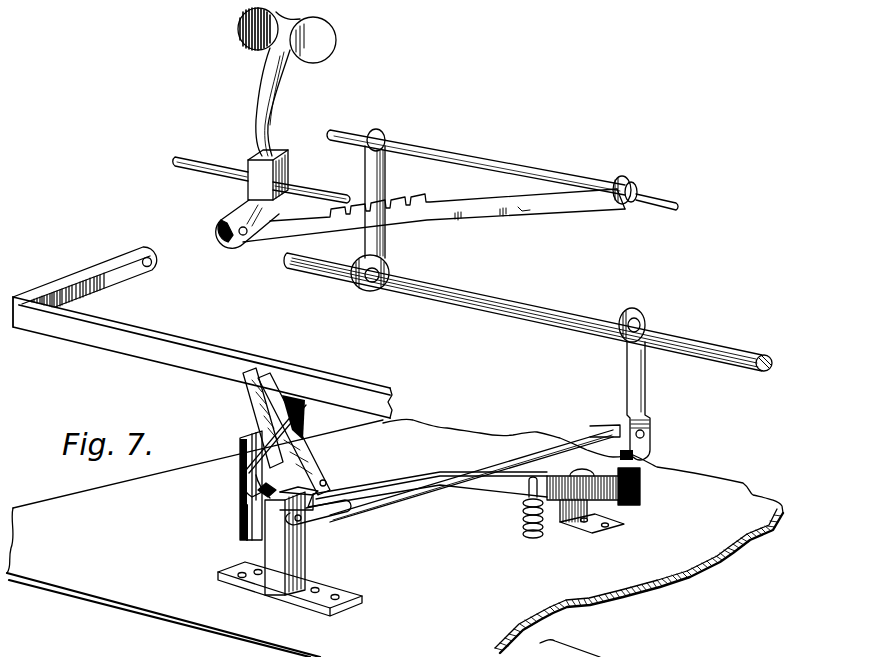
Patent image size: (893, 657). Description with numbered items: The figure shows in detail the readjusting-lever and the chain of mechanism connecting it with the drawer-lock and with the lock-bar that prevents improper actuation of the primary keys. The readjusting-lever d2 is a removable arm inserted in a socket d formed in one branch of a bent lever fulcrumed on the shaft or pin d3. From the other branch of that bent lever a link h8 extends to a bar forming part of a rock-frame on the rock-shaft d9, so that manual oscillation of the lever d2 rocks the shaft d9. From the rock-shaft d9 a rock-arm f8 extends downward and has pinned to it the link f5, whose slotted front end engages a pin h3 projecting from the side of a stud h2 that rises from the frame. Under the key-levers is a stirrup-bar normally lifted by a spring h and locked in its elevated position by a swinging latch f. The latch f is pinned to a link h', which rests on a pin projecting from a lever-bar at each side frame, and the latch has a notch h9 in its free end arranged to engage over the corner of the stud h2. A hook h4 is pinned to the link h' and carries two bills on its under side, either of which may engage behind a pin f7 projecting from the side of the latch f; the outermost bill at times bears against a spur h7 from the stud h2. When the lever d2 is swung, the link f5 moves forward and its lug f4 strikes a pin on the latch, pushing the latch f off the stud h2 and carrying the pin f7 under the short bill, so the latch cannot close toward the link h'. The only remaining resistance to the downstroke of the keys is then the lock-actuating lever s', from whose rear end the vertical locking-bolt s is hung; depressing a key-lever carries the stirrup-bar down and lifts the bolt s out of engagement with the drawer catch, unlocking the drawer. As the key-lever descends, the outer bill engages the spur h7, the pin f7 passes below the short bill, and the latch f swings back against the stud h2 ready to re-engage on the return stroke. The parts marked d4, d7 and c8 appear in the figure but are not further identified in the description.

The readjusting-lever d2 is at (269, 107).
The shaft or pin d3 is at (311, 191).
The socket d is at (250, 197).
The arm d4 is at (256, 233).
The rack bar d7 is at (408, 205).
The link h8 is at (454, 214).
The upper rod c8 is at (662, 201).
The rock-shaft d9 is at (695, 338).
The rock-arm f8 is at (646, 389).
The spring h is at (278, 392).
The hook h4 is at (251, 437).
The link h' is at (296, 431).
The swinging latch f is at (260, 455).
The pin f7 is at (258, 470).
The notch h9 is at (258, 498).
The spur h7 is at (245, 537).
The pin h3 is at (285, 543).
The stud h2 is at (308, 553).
The lug f4 is at (336, 508).
The link f5 is at (397, 500).
The lock-actuating lever s' is at (427, 499).
The locking-bolt s is at (598, 500).